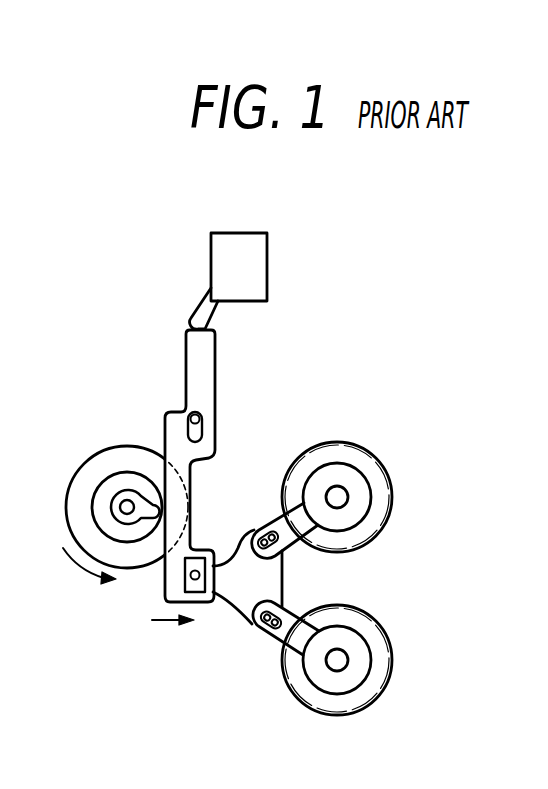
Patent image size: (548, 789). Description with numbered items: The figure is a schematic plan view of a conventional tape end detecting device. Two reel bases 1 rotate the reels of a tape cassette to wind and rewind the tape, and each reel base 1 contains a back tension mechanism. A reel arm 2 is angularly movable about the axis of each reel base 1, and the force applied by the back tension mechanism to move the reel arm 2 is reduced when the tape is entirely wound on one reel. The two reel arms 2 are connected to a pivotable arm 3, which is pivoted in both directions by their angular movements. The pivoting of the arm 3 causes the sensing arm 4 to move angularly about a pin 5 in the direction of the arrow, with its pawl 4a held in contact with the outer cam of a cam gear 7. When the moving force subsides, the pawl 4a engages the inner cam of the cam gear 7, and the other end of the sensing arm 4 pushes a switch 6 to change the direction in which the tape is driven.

The reel base 1 is at (373, 473).
The reel arm 2 is at (290, 540).
The pivotable arm 3 is at (233, 589).
The sensing arm 4 is at (167, 593).
The pawl 4a is at (200, 485).
The pin 5 is at (201, 414).
The switch 6 is at (248, 242).
The cam gear 7 is at (78, 503).